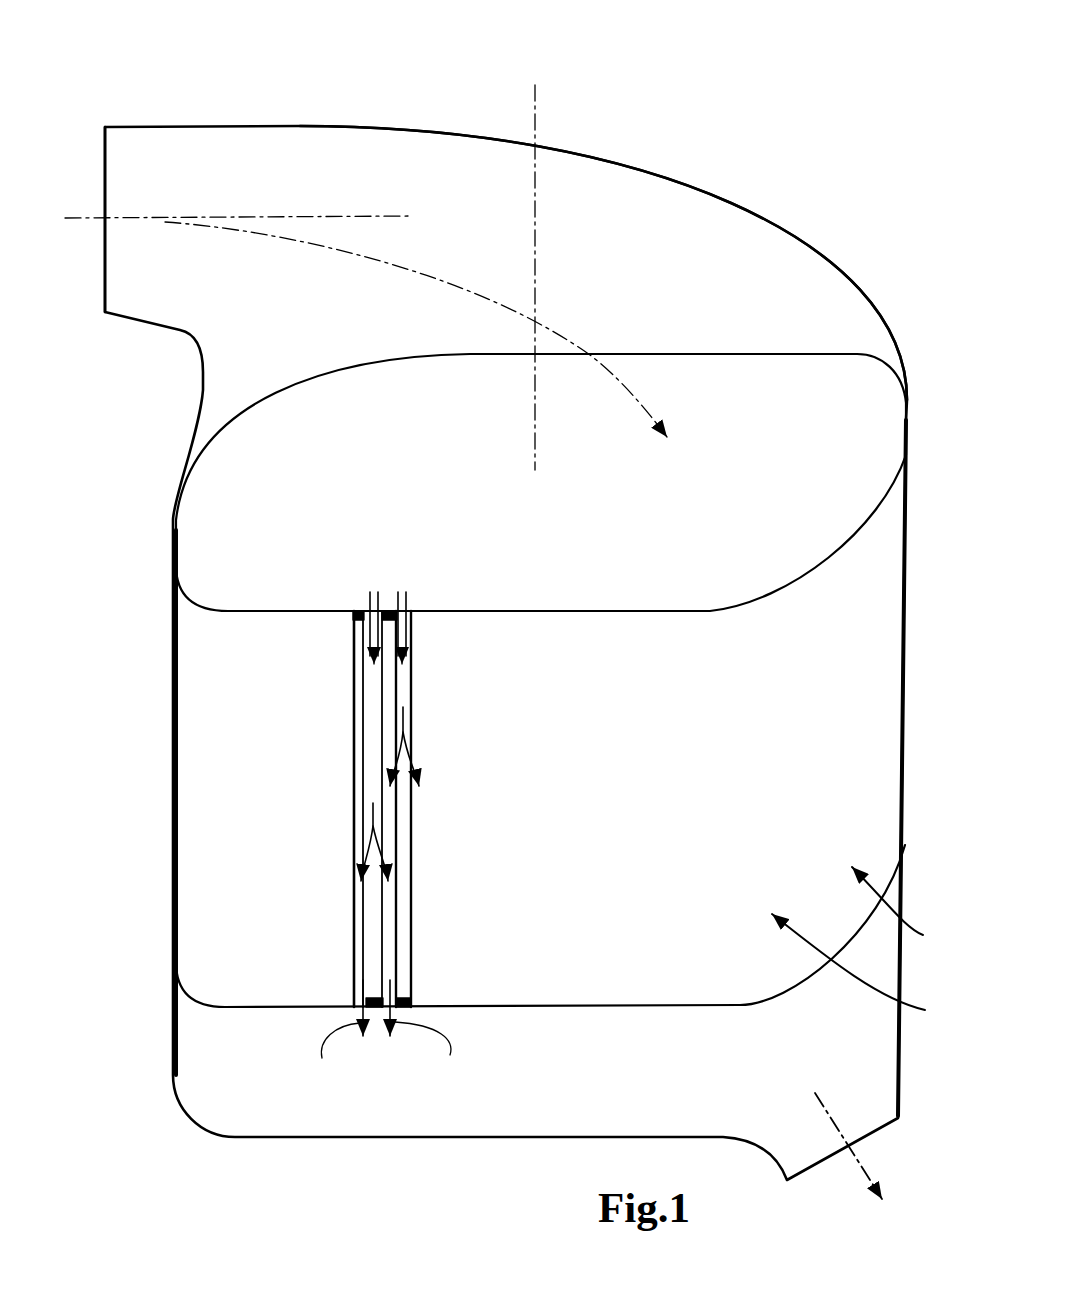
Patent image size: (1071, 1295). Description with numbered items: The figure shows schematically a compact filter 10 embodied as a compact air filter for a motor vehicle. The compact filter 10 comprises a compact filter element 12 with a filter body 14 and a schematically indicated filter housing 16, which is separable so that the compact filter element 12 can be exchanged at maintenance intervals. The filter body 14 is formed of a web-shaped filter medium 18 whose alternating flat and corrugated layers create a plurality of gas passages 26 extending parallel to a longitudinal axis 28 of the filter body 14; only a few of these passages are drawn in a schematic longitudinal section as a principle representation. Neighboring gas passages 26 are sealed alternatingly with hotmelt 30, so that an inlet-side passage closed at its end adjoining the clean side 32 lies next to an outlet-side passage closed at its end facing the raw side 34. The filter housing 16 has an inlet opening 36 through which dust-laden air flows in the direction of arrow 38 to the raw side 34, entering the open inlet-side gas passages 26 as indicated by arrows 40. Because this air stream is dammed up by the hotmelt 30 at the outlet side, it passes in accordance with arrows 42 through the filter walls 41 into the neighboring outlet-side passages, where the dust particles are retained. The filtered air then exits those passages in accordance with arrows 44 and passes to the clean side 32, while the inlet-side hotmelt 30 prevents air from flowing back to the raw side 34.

The compact filter 10 is at (250, 108).
The compact filter element 12 is at (865, 1056).
The filter body 14 is at (903, 909).
The filter housing 16 is at (789, 229).
The web-shaped filter medium 18 is at (341, 647).
The gas passages 26 is at (405, 688).
The longitudinal axis 28 is at (532, 128).
The hotmelt 30 is at (358, 609).
The clean side 32 is at (639, 1083).
The raw side 34 is at (639, 536).
The inlet opening 36 is at (112, 178).
The arrow 38 is at (326, 246).
The arrows 40 is at (370, 600).
The filter walls 41 is at (414, 812).
The arrows 42 is at (407, 720).
The arrows 44 is at (388, 1052).